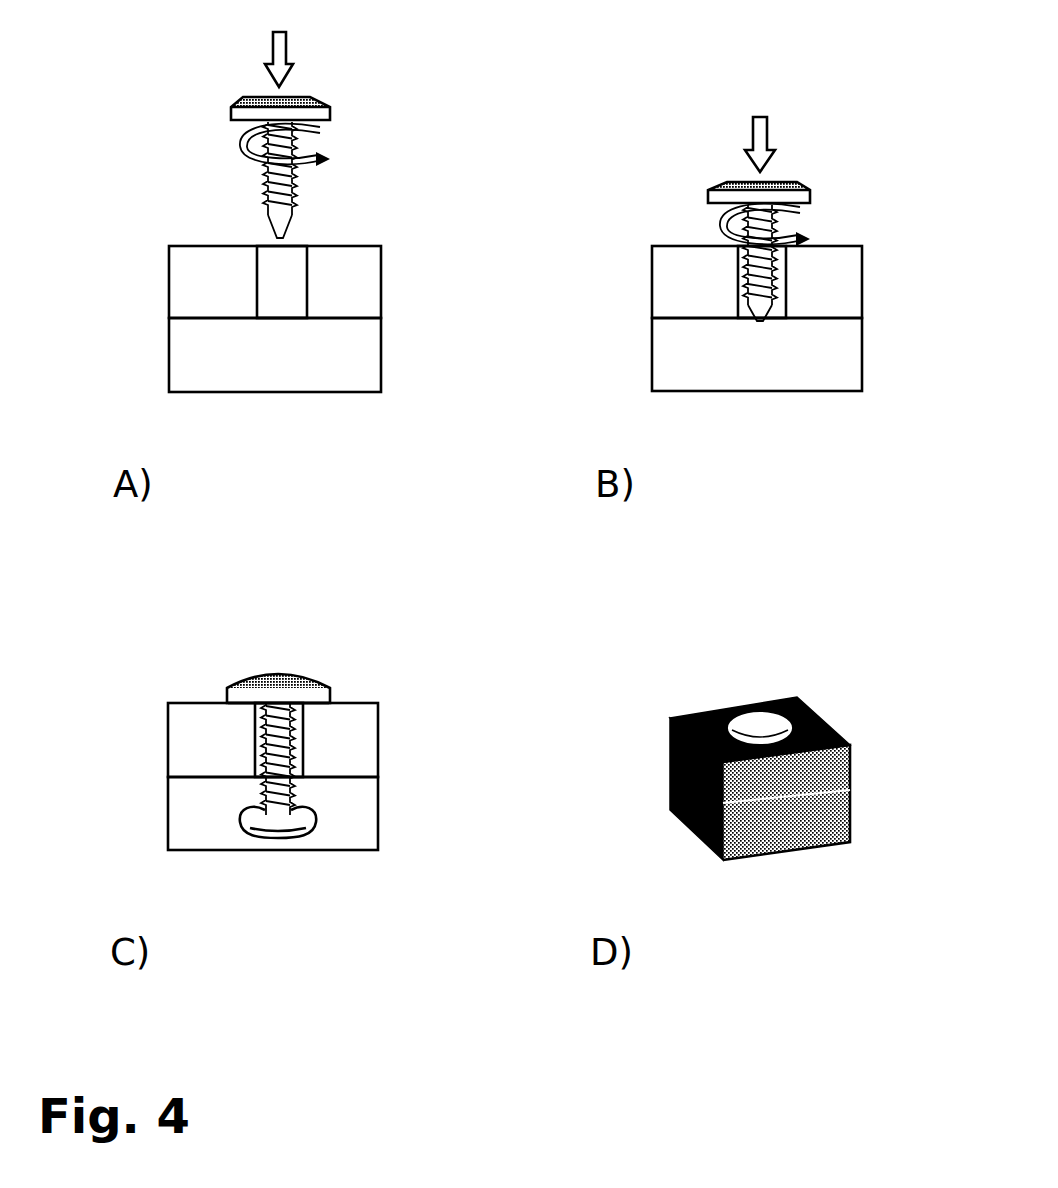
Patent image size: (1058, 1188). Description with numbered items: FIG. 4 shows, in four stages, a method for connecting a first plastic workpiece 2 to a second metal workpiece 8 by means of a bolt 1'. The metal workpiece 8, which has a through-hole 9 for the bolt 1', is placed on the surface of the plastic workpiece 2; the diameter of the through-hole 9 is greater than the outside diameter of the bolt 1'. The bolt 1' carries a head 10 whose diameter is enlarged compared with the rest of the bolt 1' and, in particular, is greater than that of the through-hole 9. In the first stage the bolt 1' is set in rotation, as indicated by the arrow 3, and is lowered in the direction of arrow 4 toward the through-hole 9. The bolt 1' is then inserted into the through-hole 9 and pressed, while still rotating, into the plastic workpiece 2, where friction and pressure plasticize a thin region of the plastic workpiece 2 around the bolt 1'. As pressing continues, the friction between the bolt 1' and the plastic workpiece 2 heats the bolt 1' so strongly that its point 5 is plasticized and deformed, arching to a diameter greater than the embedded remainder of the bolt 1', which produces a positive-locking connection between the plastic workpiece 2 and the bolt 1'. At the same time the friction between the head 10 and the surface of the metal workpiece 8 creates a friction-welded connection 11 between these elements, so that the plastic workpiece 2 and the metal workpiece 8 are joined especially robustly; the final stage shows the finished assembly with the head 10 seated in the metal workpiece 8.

The bolt 1' is at (600, 465).
The first plastic workpiece 2 is at (330, 353).
The arrow 3 is at (240, 145).
The arrow 4 is at (277, 53).
The point 5 is at (283, 233).
The second metal workpiece 8 is at (220, 258).
The through-hole 9 is at (282, 282).
The head 10 is at (302, 100).
The friction-welded connection 11 is at (227, 705).